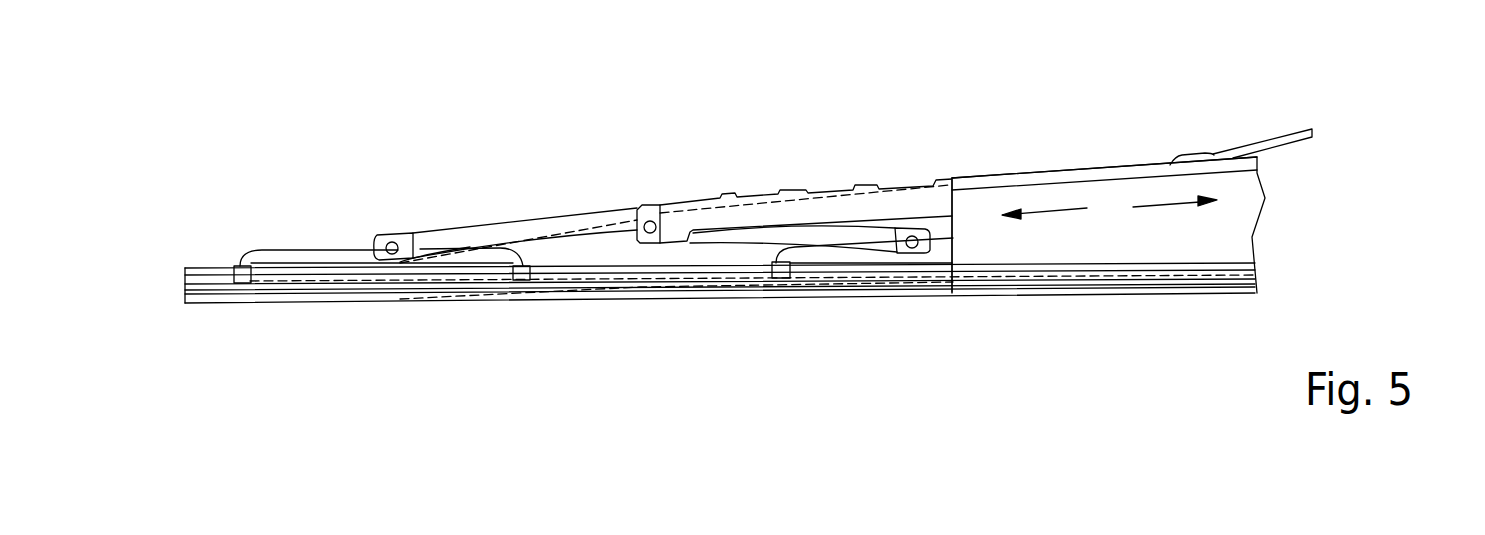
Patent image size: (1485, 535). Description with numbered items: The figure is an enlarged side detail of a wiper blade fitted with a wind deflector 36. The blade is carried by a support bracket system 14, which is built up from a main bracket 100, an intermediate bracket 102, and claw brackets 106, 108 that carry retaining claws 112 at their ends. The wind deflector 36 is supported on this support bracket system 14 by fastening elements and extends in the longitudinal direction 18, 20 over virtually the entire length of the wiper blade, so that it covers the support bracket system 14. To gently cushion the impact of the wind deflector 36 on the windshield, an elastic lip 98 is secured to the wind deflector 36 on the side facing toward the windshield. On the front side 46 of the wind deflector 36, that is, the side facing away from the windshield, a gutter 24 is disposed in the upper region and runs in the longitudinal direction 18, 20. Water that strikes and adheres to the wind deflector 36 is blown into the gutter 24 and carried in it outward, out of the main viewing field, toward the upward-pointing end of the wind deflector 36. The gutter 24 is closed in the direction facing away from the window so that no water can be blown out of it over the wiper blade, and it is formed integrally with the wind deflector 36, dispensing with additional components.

The support bracket system 14 is at (898, 168).
The longitudinal direction 18 is at (1048, 212).
The longitudinal direction 20 is at (1178, 203).
The gutter 24 is at (1025, 180).
The wind deflector 36 is at (1121, 160).
The front side 46 is at (967, 242).
The elastic lip 98 is at (1125, 270).
The main bracket 100 is at (703, 217).
The intermediate bracket 102 is at (445, 233).
The claw bracket 106 is at (283, 255).
The claw bracket 108 is at (820, 250).
The retaining claws 112 is at (760, 280).